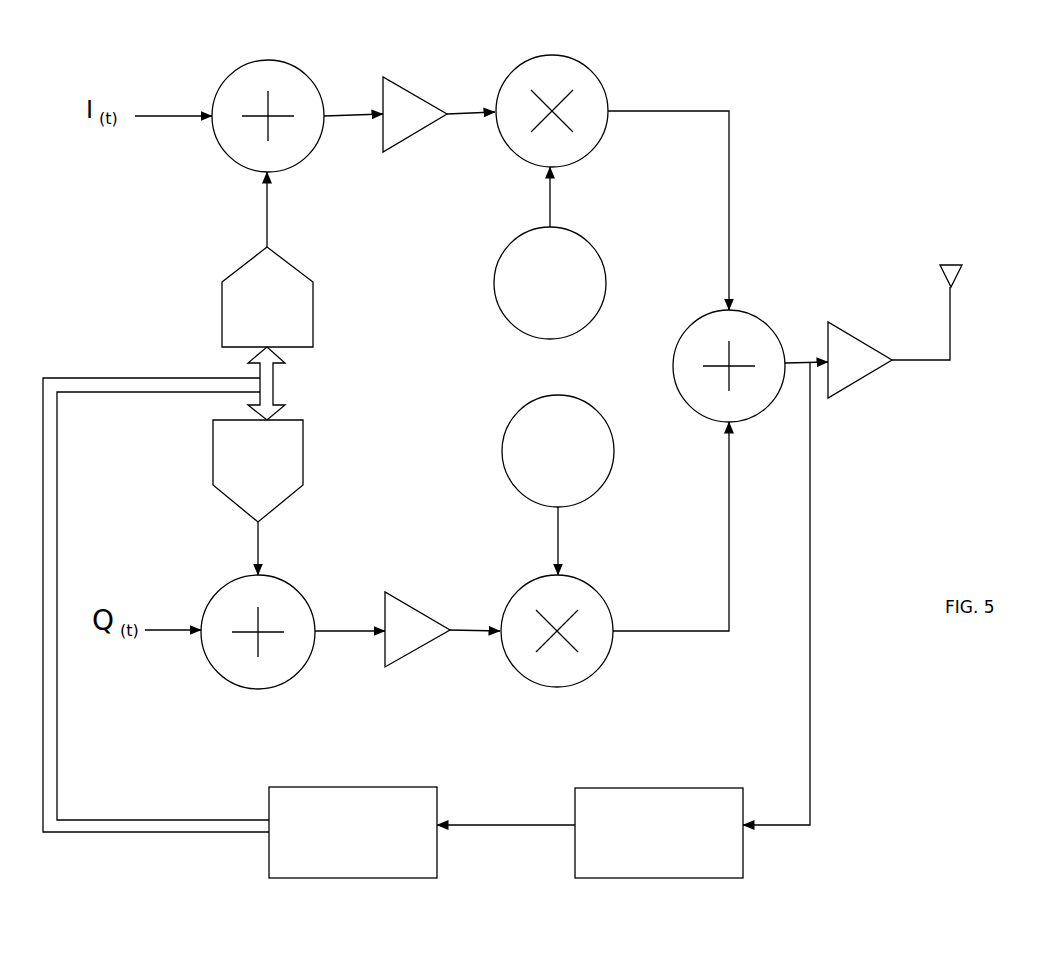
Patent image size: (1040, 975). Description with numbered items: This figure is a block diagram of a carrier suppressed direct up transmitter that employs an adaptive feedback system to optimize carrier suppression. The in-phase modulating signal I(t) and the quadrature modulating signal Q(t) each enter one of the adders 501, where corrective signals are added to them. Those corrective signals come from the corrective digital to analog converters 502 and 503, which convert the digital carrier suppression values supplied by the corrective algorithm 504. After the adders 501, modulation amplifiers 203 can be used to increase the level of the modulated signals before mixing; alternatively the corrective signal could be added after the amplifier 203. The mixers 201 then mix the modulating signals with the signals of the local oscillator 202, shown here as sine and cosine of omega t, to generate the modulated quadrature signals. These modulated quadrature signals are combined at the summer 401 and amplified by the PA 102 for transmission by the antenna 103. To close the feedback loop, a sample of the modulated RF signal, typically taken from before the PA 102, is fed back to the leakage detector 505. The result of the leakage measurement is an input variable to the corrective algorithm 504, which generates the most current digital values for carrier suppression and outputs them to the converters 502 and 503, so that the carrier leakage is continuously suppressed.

The adders 501 is at (307, 63).
The modulation amplifiers 203 is at (416, 83).
The mixers 201 is at (587, 55).
The local oscillator 202 is at (599, 230).
The corrective digital to analog converter 502 is at (302, 260).
The corrective digital to analog converter 503 is at (312, 470).
The summer 401 is at (772, 308).
The PA 102 is at (859, 326).
The antenna 103 is at (964, 253).
The corrective algorithm 504 is at (404, 778).
The leakage detector 505 is at (711, 778).